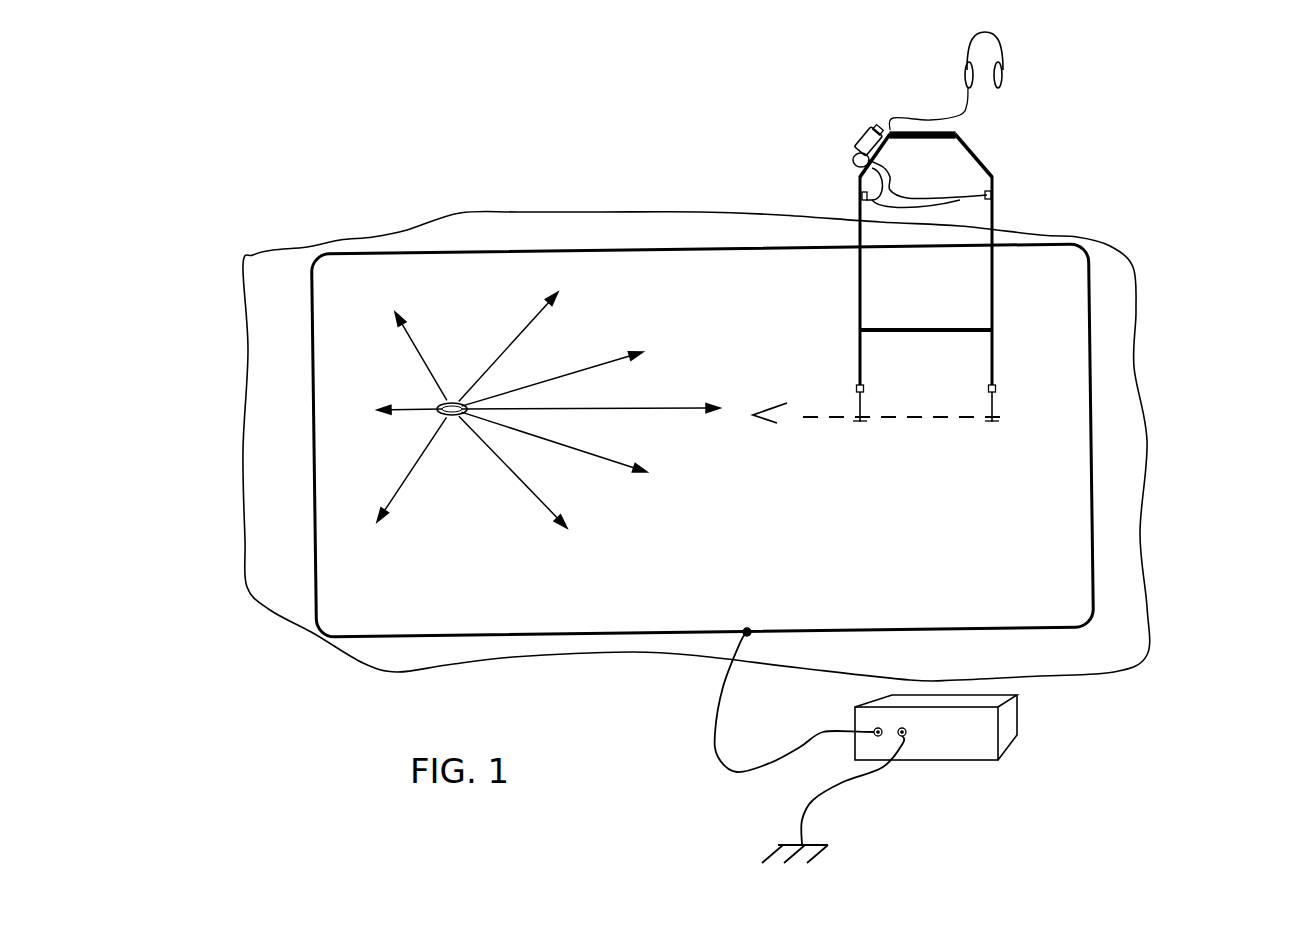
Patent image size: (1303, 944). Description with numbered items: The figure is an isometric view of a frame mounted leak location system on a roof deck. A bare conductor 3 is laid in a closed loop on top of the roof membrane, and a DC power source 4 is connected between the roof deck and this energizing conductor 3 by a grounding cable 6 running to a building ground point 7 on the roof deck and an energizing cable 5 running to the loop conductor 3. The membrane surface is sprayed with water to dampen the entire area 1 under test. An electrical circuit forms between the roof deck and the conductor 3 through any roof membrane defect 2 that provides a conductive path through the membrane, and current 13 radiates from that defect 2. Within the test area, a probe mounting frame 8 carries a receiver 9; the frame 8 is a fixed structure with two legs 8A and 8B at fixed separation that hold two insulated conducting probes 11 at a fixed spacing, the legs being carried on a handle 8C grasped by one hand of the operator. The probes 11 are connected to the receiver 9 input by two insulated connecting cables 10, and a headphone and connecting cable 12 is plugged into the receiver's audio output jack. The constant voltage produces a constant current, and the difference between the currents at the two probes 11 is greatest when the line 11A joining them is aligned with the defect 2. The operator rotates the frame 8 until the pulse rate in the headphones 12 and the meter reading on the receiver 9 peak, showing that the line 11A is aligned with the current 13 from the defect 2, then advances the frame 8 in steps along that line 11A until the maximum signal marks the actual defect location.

The area under test 1 is at (285, 285).
The roof membrane defect 2 is at (438, 405).
The bare conductor 3 is at (548, 247).
The DC power source 4 is at (1018, 712).
The energizing cable 5 is at (708, 705).
The grounding cable 6 is at (800, 812).
The building ground point 7 is at (823, 860).
The probe mounting frame 8 is at (941, 221).
The leg 8A is at (875, 304).
The leg 8B is at (995, 303).
The handle 8C is at (957, 128).
The receiver 9 is at (858, 137).
The insulated connecting cables 10 is at (960, 200).
The insulated conducting probes 11 is at (870, 420).
The line joining the probes 11A is at (817, 418).
The headphone and connecting cable 12 is at (963, 74).
The current from the defect 13 is at (580, 280).